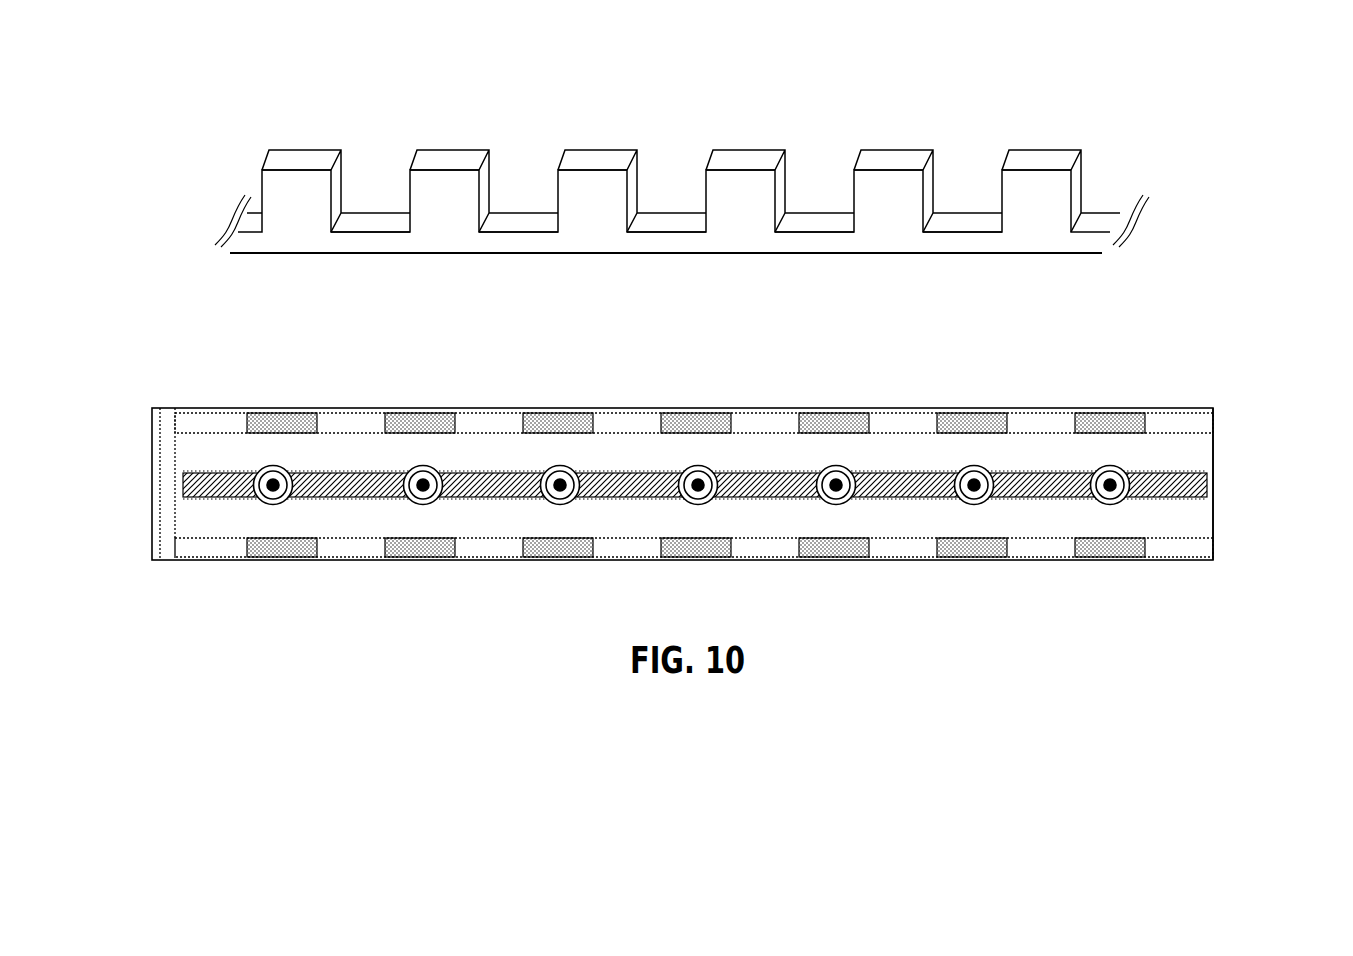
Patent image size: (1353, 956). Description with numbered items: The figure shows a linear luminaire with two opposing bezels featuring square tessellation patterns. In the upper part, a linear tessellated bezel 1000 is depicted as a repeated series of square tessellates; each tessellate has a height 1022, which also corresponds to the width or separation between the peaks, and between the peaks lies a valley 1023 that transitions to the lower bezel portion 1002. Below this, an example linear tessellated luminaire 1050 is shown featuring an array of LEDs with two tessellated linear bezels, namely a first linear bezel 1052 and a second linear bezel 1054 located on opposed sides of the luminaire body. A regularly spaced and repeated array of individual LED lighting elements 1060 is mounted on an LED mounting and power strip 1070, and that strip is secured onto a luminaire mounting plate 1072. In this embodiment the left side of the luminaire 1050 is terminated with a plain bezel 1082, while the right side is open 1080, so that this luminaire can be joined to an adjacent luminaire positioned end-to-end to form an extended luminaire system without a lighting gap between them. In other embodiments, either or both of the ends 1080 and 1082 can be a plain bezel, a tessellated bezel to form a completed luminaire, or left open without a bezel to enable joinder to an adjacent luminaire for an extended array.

The linear tessellated bezel 1000 is at (147, 143).
The lower bezel portion 1002 is at (735, 240).
The height of square tessellates 1022 is at (440, 165).
The valley 1023 is at (525, 215).
The linear tessellated luminaire 1050 is at (107, 393).
The first linear bezel 1052 is at (283, 405).
The second linear bezel 1054 is at (297, 559).
The LED lighting elements 1060 is at (680, 463).
The LED mounting and power strip 1070 is at (902, 482).
The luminaire mounting plate 1072 is at (495, 507).
The open right side 1080 is at (1217, 510).
The plain bezel 1082 is at (175, 485).